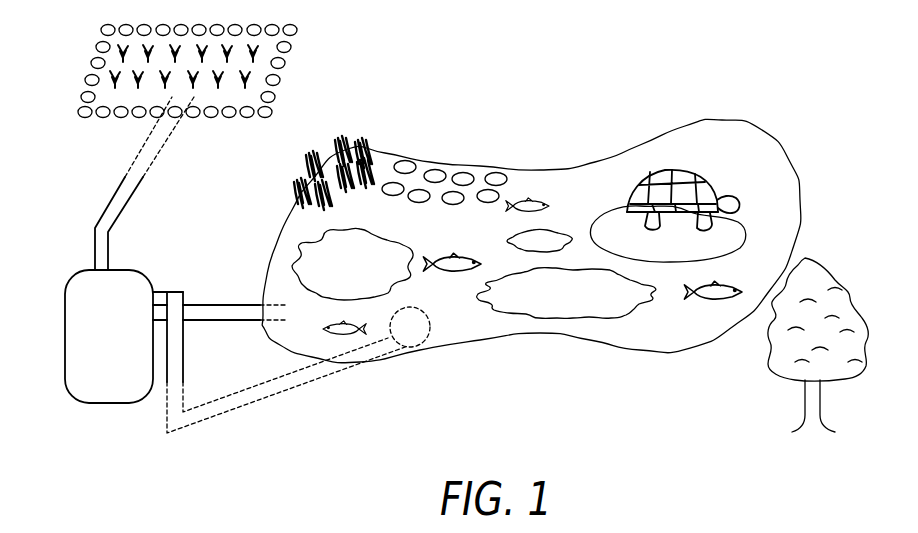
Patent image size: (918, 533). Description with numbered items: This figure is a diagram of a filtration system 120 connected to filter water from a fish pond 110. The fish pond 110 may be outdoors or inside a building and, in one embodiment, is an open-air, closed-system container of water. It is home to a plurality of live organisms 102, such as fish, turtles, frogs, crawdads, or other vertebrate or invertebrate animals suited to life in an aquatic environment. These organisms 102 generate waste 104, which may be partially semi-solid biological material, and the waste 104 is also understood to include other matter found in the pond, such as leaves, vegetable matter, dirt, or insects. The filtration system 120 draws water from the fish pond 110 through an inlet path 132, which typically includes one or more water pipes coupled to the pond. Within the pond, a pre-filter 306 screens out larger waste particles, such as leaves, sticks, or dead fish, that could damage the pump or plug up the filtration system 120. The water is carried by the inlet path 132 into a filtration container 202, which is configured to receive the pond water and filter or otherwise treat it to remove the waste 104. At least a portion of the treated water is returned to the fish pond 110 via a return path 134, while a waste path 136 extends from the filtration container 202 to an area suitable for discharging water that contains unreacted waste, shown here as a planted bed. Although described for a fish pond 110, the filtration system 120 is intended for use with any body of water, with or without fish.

The fish pond 110 is at (724, 120).
The live organisms 102 is at (745, 280).
The waste 104 is at (330, 245).
The filtration system 120 is at (210, 245).
The filtration container 202 is at (105, 405).
The waste path 136 is at (100, 247).
The return path 134 is at (218, 315).
The inlet path 132 is at (175, 352).
The pre-filter 306 is at (422, 335).